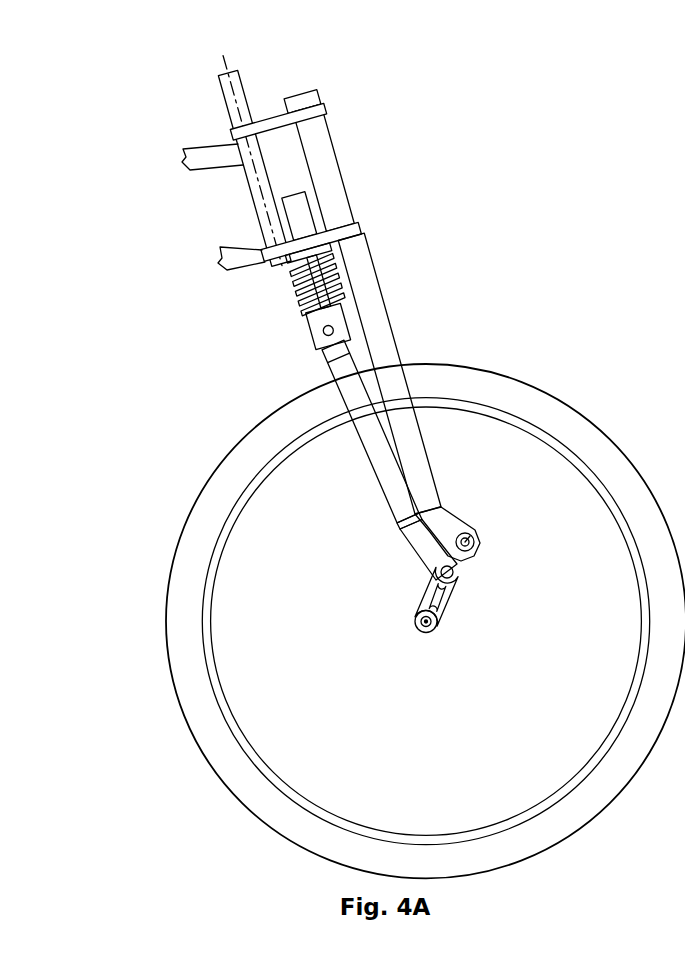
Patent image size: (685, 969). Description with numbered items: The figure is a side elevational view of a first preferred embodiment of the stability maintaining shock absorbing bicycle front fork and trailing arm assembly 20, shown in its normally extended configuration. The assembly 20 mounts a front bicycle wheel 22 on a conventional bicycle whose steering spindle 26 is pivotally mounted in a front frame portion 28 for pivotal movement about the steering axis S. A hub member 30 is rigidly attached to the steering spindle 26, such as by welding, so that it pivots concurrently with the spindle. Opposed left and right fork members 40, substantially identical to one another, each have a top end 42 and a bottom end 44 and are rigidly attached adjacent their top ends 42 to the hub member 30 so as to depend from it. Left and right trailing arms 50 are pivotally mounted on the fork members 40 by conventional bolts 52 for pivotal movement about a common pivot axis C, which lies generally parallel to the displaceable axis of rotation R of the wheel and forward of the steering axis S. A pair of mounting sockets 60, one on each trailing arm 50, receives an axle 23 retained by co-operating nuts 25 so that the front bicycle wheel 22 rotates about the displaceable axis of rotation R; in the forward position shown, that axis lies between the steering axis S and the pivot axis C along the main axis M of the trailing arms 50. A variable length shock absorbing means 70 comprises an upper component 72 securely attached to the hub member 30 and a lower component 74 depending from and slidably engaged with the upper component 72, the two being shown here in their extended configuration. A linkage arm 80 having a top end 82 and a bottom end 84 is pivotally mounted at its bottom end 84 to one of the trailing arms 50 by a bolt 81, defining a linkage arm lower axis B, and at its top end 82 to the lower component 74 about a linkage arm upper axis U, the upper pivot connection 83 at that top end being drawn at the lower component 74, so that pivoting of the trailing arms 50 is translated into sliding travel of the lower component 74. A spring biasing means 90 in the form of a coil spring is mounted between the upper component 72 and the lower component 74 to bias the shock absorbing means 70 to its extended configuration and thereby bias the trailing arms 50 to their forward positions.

The front fork and trailing arm assembly 20 is at (419, 454).
The front bicycle wheel 22 is at (627, 450).
The axle 23 is at (440, 623).
The co-operating nuts 25 is at (417, 620).
The steering spindle 26 is at (250, 182).
The front frame portion 28 is at (359, 370).
The hub member 30 is at (263, 261).
The fork members 40 is at (367, 292).
The top end 42 is at (322, 142).
The bottom end 44 is at (490, 518).
The trailing arms 50 is at (423, 657).
The bolts 52 is at (482, 548).
The mounting sockets 60 is at (435, 630).
The variable length shock absorbing means 70 is at (294, 332).
The upper component 72 is at (303, 275).
The lower component 74 is at (346, 329).
The linkage arm 80 is at (378, 477).
The bolt 81 is at (454, 573).
The top end 82 is at (323, 350).
The upper pivot 83 is at (338, 328).
The bottom end 84 is at (441, 559).
The spring biasing means 90 is at (340, 257).